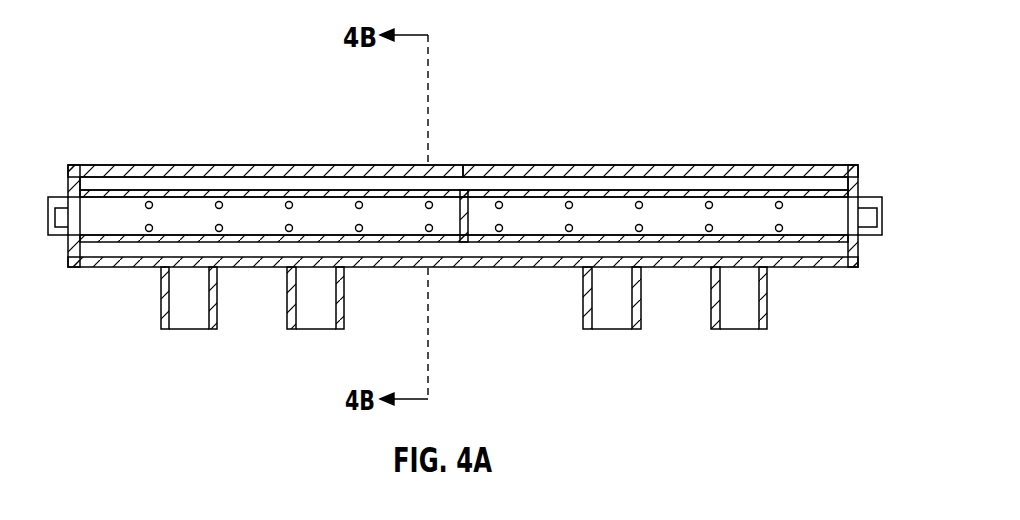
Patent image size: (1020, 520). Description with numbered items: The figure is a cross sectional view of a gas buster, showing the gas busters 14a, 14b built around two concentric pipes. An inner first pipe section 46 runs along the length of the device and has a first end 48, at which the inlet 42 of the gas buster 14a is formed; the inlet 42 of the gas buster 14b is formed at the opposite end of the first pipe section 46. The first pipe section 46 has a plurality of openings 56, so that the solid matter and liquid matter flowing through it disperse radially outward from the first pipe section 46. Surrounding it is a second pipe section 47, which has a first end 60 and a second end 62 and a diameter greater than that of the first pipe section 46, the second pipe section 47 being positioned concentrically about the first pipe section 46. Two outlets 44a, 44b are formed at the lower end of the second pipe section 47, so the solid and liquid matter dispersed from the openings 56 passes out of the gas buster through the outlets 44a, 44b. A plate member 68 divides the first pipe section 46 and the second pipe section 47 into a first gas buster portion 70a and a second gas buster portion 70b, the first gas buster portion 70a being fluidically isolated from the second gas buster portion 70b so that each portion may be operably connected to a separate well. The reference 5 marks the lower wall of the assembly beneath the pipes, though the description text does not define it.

The base plate 5 is at (840, 240).
The gas buster 14a is at (155, 165).
The gas buster 14b is at (506, 165).
The inlet 42 is at (66, 221).
The outlet 44a is at (187, 330).
The outlet 44b is at (313, 330).
The first pipe section 46 is at (252, 165).
The second pipe section 47 is at (314, 165).
The first end 48 is at (62, 193).
The openings 56 is at (147, 230).
The first end 60 is at (78, 165).
The second end 62 is at (832, 165).
The plate member 68 is at (470, 228).
The first gas buster portion 70a is at (197, 165).
The second gas buster portion 70b is at (697, 165).